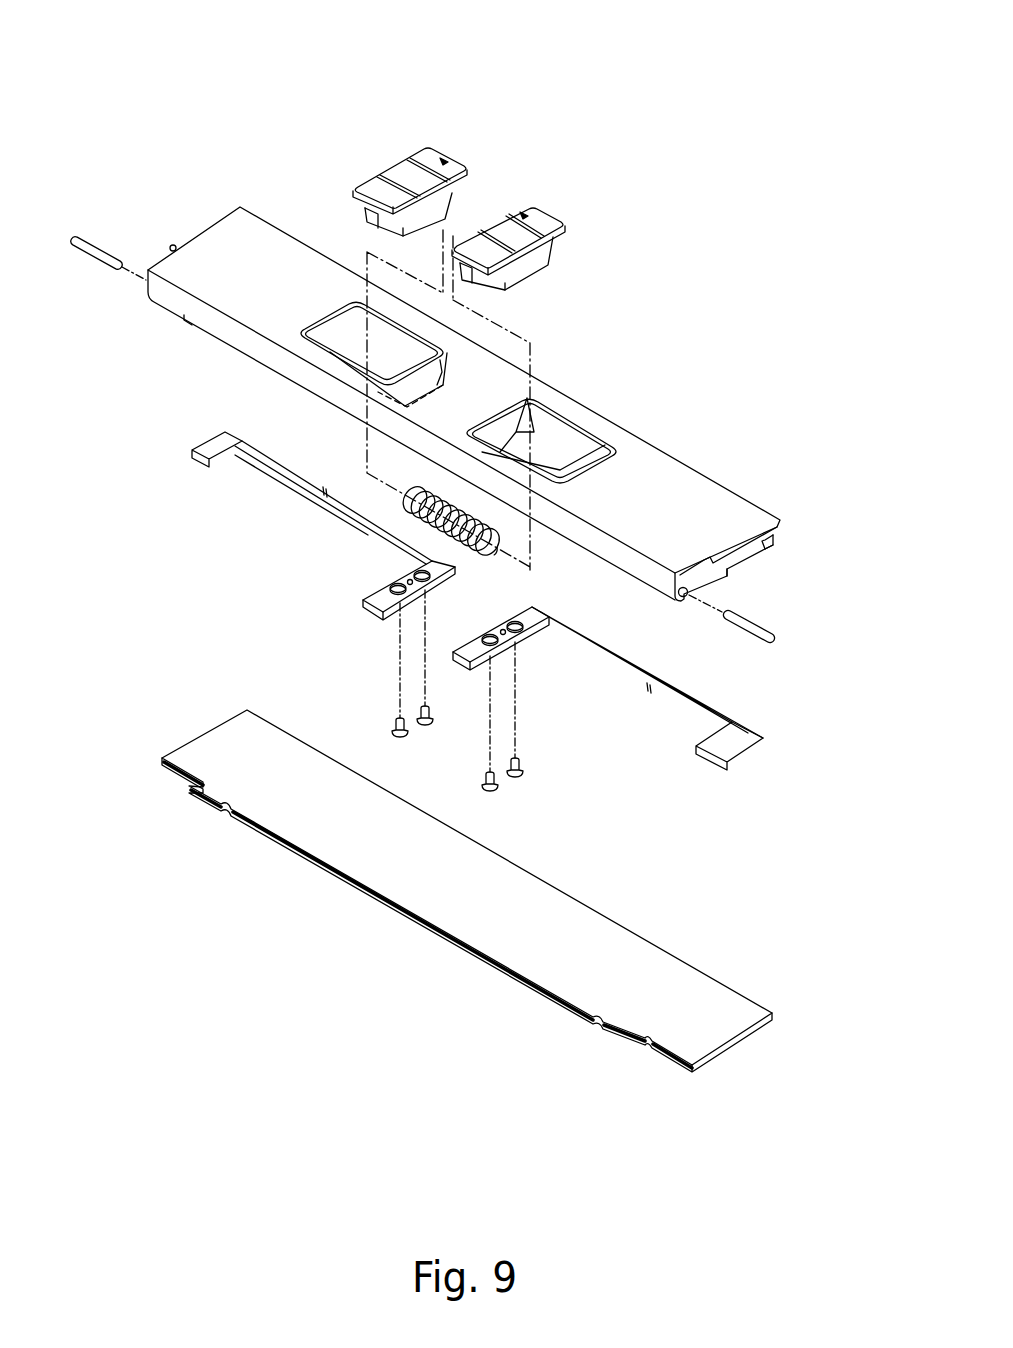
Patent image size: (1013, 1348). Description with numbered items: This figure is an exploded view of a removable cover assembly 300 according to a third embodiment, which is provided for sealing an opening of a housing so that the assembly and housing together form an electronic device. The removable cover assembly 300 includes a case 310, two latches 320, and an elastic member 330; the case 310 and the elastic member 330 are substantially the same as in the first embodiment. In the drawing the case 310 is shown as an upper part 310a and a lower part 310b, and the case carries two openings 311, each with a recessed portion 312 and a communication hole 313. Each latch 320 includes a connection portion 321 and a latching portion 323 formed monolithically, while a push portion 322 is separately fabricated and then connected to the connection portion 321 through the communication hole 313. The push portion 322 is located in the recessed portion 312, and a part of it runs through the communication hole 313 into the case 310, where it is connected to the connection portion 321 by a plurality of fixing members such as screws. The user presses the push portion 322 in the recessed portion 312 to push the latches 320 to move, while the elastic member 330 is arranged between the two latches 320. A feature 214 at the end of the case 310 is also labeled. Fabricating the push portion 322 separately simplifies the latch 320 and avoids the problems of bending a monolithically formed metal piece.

The removable cover assembly 300 is at (182, 100).
The case 310 is at (85, 453).
The upper housing plate 310a is at (243, 338).
The lower housing plate 310b is at (265, 740).
The key opening 311 is at (332, 306).
The recessed portion 312 is at (347, 355).
The communication hole 313 is at (445, 377).
The latch 320 is at (333, 535).
The connection portion 321 is at (360, 523).
The push portion 322 is at (440, 158).
The latching portion 323 is at (215, 452).
The elastic member 330 is at (500, 553).
The hook 214 is at (745, 557).